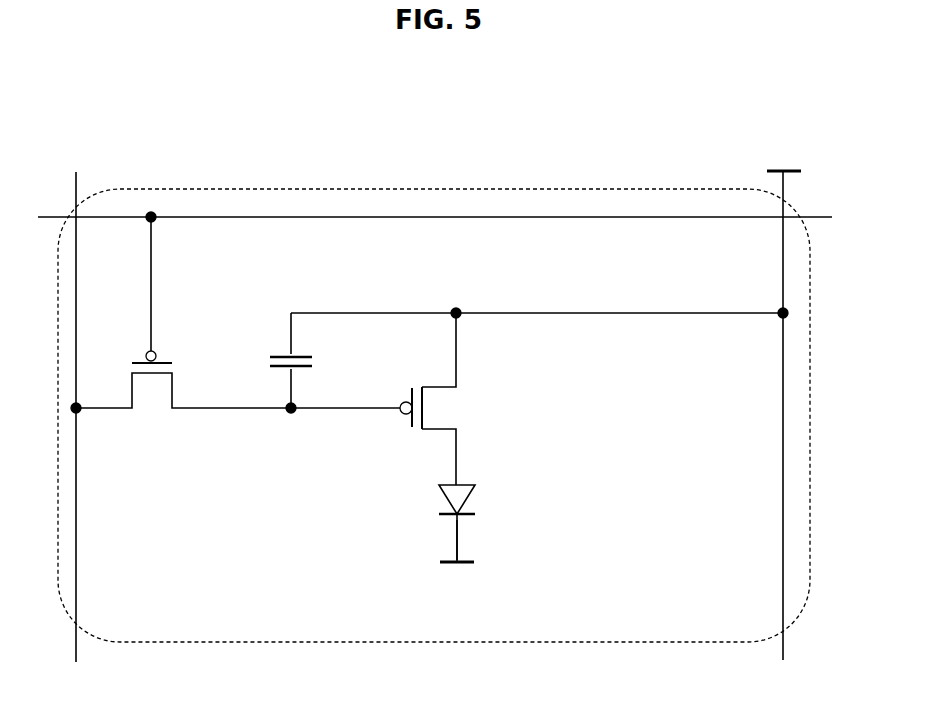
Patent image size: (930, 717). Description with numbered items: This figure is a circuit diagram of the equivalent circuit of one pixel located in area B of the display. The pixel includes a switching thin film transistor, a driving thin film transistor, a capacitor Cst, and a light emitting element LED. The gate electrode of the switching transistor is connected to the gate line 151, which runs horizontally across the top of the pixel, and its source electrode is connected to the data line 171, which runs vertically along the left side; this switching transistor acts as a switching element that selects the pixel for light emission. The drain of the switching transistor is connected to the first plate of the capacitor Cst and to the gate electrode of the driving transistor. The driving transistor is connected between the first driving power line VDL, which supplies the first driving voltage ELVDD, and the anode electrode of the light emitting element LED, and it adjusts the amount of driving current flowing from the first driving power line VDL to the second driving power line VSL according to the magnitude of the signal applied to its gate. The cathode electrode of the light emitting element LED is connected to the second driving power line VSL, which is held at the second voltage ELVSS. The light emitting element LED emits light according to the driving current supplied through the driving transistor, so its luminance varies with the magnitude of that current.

The area B is at (303, 189).
The gate line 151 is at (230, 218).
The data line 171 is at (76, 559).
The capacitor Cst is at (313, 360).
The light emitting element LED is at (431, 523).
The first driving power line VDL is at (783, 424).
The second driving power line VSL is at (457, 532).
The first driving voltage ELVDD is at (782, 152).
The second driving voltage ELVSS is at (456, 579).